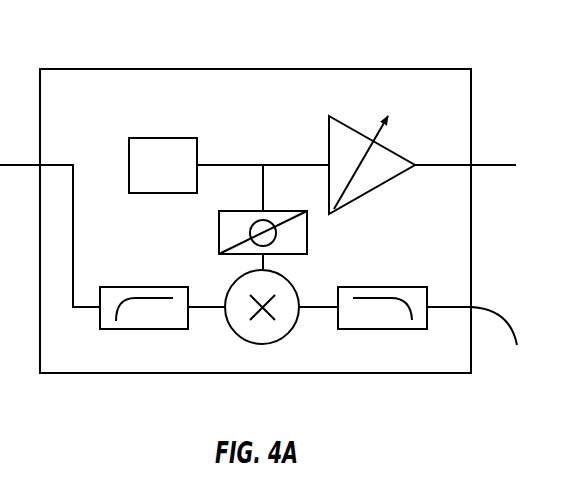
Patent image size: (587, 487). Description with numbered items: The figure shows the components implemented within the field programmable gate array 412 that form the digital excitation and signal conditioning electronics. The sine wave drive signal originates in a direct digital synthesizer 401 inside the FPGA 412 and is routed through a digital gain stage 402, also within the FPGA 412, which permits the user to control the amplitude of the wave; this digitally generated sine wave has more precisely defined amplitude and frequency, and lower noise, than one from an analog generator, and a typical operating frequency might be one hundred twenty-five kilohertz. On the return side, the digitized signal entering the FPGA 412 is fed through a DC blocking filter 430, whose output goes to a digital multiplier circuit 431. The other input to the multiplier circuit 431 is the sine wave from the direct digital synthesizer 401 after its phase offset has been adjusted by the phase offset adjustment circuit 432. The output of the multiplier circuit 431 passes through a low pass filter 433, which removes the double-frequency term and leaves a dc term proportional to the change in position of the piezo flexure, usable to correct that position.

The field programmable gate array 412 is at (88, 57).
The direct digital synthesizer 401 is at (151, 134).
The digital gain stage 402 is at (323, 132).
The DC blocking filter 430 is at (127, 333).
The digital multiplier circuit 431 is at (232, 282).
The phase offset adjustment circuit 432 is at (310, 229).
The low pass filter 433 is at (372, 333).